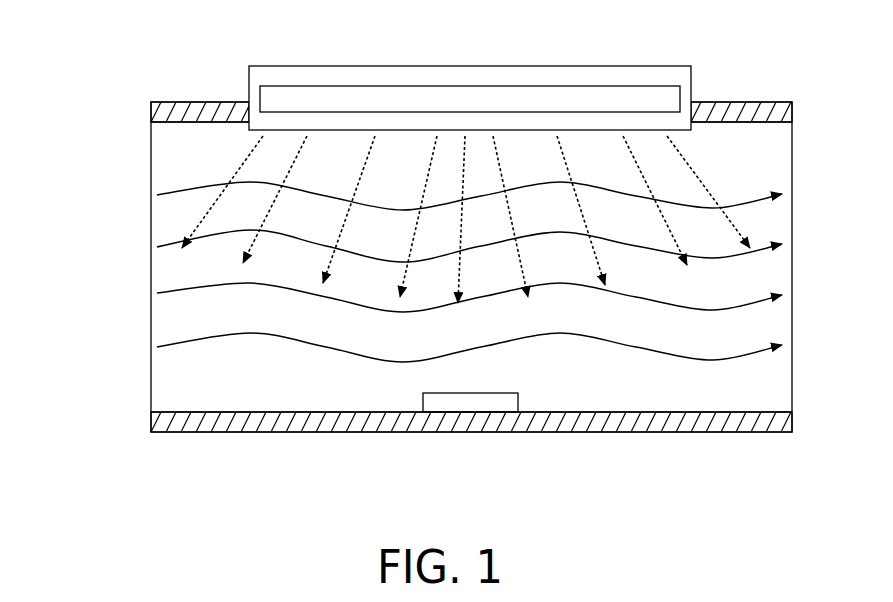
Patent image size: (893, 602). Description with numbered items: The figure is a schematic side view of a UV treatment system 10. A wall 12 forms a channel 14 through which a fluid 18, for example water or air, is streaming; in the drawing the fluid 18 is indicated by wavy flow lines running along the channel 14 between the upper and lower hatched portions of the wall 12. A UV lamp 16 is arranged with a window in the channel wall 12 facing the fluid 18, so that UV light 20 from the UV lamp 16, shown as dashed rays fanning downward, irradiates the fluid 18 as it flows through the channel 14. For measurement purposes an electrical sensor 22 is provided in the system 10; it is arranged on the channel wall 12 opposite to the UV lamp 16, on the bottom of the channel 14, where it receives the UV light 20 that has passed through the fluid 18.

The UV treatment system 10 is at (128, 78).
The wall 12 is at (226, 412).
The channel 14 is at (137, 291).
The UV-lamp 16 is at (432, 102).
The fluid 18 is at (215, 325).
The UV light 20 is at (496, 181).
The electrical sensor 22 is at (470, 405).